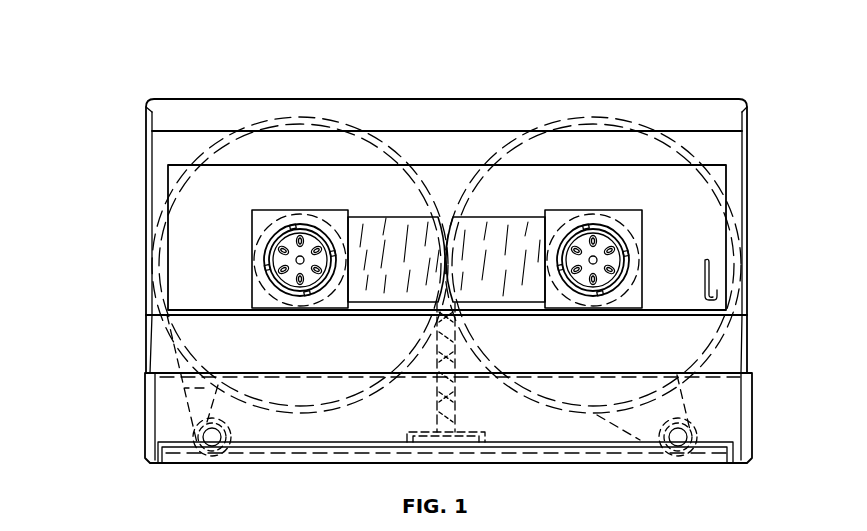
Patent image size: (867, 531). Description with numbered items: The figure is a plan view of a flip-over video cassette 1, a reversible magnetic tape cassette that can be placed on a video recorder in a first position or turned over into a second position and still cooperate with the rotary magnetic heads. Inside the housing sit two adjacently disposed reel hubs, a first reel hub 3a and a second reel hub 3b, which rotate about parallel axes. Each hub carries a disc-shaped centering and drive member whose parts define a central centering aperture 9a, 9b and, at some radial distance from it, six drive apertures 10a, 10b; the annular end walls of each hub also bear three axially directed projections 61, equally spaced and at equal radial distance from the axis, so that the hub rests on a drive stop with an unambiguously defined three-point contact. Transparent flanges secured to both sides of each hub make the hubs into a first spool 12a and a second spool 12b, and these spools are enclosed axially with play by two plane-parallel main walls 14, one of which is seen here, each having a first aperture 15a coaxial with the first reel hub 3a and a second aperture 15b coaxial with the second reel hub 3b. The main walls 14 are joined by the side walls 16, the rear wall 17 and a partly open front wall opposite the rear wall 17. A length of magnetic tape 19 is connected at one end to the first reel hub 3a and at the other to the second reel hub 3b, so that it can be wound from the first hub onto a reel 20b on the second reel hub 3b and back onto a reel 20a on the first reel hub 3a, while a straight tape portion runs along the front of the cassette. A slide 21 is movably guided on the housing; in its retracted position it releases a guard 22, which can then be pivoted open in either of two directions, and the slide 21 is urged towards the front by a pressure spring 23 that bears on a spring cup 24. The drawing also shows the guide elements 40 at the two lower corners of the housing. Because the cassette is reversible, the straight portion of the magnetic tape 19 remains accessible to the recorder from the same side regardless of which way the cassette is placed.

The video cassette 1 is at (140, 181).
The first reel hub 3a is at (312, 240).
The second reel hub 3b is at (603, 240).
The central centering aperture of first reel hub 9a is at (297, 261).
The central centering aperture of second reel hub 9b is at (598, 261).
The drive apertures of first reel hub 10a is at (282, 249).
The drive apertures of second reel hub 10b is at (612, 282).
The first spool 12a is at (358, 122).
The second spool 12b is at (570, 116).
The main wall 14 is at (158, 196).
The first aperture 15a is at (268, 279).
The second aperture 15b is at (628, 244).
The side wall 16 is at (146, 288).
The rear wall 17 is at (454, 99).
The magnetic tape 19 is at (185, 388).
The reel on first reel hub 20a is at (270, 152).
The reel on second reel hub 20b is at (640, 222).
The slide 21 is at (300, 440).
The guard 22 is at (332, 458).
The pressure spring 23 is at (456, 358).
The spring cup 24 is at (474, 430).
The guide roller 40 is at (210, 450).
The axially directed projections 61 is at (296, 229).